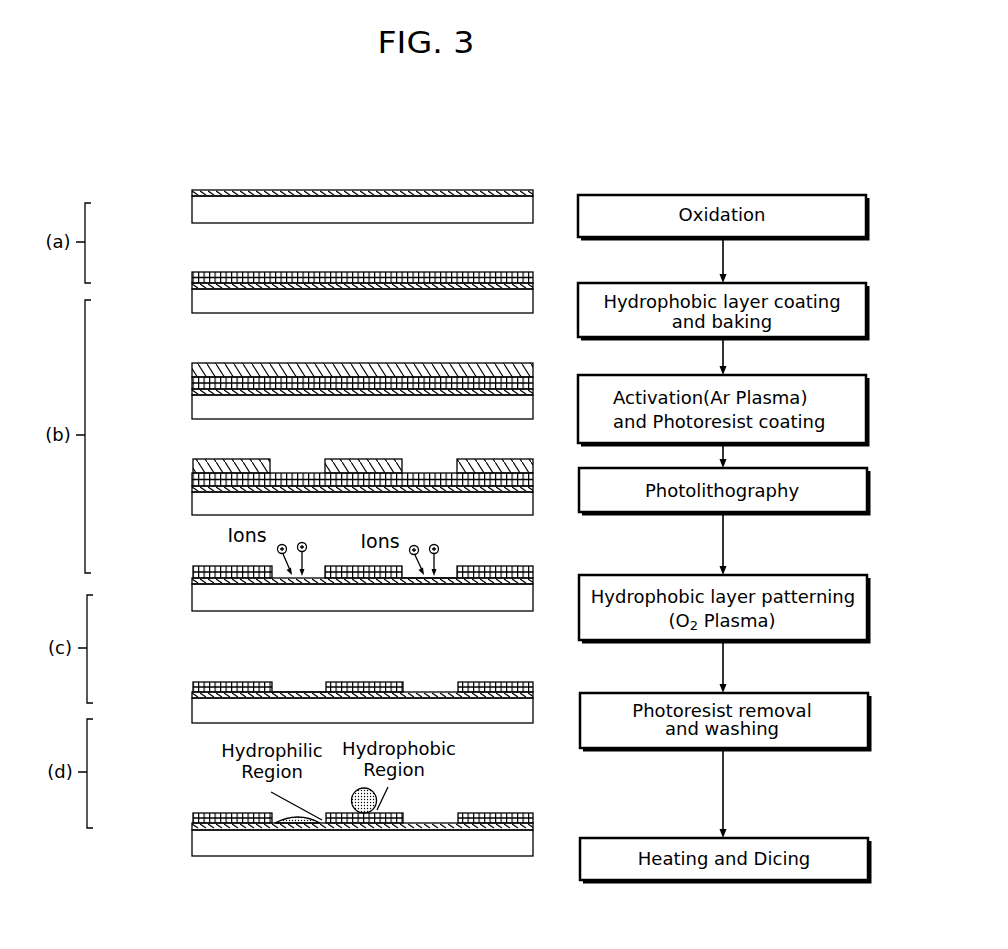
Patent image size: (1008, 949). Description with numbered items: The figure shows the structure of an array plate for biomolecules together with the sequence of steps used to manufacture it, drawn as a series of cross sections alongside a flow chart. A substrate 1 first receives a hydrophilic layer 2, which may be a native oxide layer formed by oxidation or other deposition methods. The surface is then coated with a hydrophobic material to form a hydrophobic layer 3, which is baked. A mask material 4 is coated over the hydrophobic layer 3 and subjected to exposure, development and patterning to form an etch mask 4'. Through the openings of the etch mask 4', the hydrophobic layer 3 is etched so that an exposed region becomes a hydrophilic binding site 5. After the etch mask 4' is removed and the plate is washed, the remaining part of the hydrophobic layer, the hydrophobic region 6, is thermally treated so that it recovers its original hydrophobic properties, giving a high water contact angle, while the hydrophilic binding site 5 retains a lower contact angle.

The substrate 1 is at (196, 212).
The hydrophilic layer 2 is at (192, 191).
The hydrophobic layer 3 is at (192, 276).
The photoresist layer 4 is at (326, 370).
The etch mask 4' is at (326, 519).
The hydrophilic binding site 5 is at (447, 578).
The hydrophobic region 6 is at (364, 692).